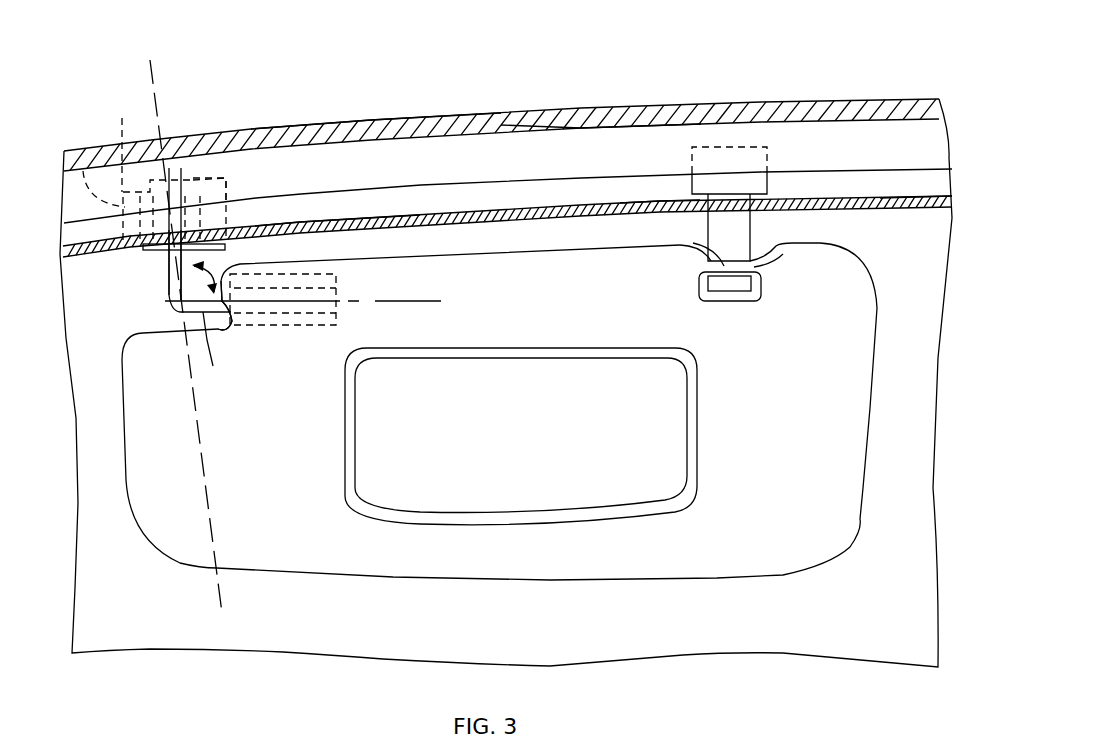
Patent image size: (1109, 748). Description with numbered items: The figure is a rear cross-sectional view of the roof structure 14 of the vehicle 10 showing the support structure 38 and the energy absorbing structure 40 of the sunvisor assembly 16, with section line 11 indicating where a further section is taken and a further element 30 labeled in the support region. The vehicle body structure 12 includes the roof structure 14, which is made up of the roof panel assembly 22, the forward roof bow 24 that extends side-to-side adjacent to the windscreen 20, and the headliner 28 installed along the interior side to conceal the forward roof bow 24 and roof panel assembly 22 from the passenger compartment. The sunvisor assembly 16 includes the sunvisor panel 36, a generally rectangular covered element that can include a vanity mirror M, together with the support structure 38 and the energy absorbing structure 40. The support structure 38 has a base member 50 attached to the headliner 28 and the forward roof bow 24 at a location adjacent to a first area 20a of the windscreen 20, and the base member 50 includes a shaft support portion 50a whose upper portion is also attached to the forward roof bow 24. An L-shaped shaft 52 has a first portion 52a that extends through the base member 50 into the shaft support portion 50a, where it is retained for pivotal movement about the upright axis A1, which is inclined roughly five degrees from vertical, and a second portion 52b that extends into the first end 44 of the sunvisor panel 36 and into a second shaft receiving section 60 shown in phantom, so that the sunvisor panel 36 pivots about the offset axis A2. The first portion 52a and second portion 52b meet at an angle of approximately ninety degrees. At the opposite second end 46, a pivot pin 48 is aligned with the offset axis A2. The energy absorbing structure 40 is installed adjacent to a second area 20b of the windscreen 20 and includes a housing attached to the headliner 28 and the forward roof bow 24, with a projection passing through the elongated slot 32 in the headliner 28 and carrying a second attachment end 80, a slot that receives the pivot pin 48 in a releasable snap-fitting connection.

The vehicle 10 is at (794, 52).
The section line 11- 11 is at (719, 78).
The vehicle body structure 12 is at (242, 117).
The roof structure 14 is at (295, 113).
The sunvisor assembly 16 is at (508, 443).
The windscreen 20 is at (767, 604).
The first area of the windscreen 20a is at (296, 242).
The second area of the windscreen 20b is at (686, 220).
The roof panel assembly 22 is at (365, 103).
The forward roof bow 24 is at (580, 142).
The headliner 28 is at (901, 204).
The visor support rod 30 is at (161, 262).
The elongated slot 32 is at (767, 204).
The sunvisor panel 36 is at (789, 508).
The support structure 38 is at (194, 172).
The energy absorbing structure 40 is at (762, 139).
The first end 44 is at (222, 326).
The second end 46 is at (772, 252).
The pivot pin 48 is at (690, 245).
The base member 50 is at (139, 243).
The shaft support portion 50a is at (72, 144).
The L-shaped shaft 52 is at (220, 234).
The first portion 52a is at (128, 143).
The second portion 52b is at (221, 353).
The second shaft receiving section 60 is at (284, 319).
The second attachment end 80 is at (748, 258).
The vanity mirror M is at (625, 399).
The upright axis A1 is at (147, 74).
The offset axis A2 is at (408, 293).